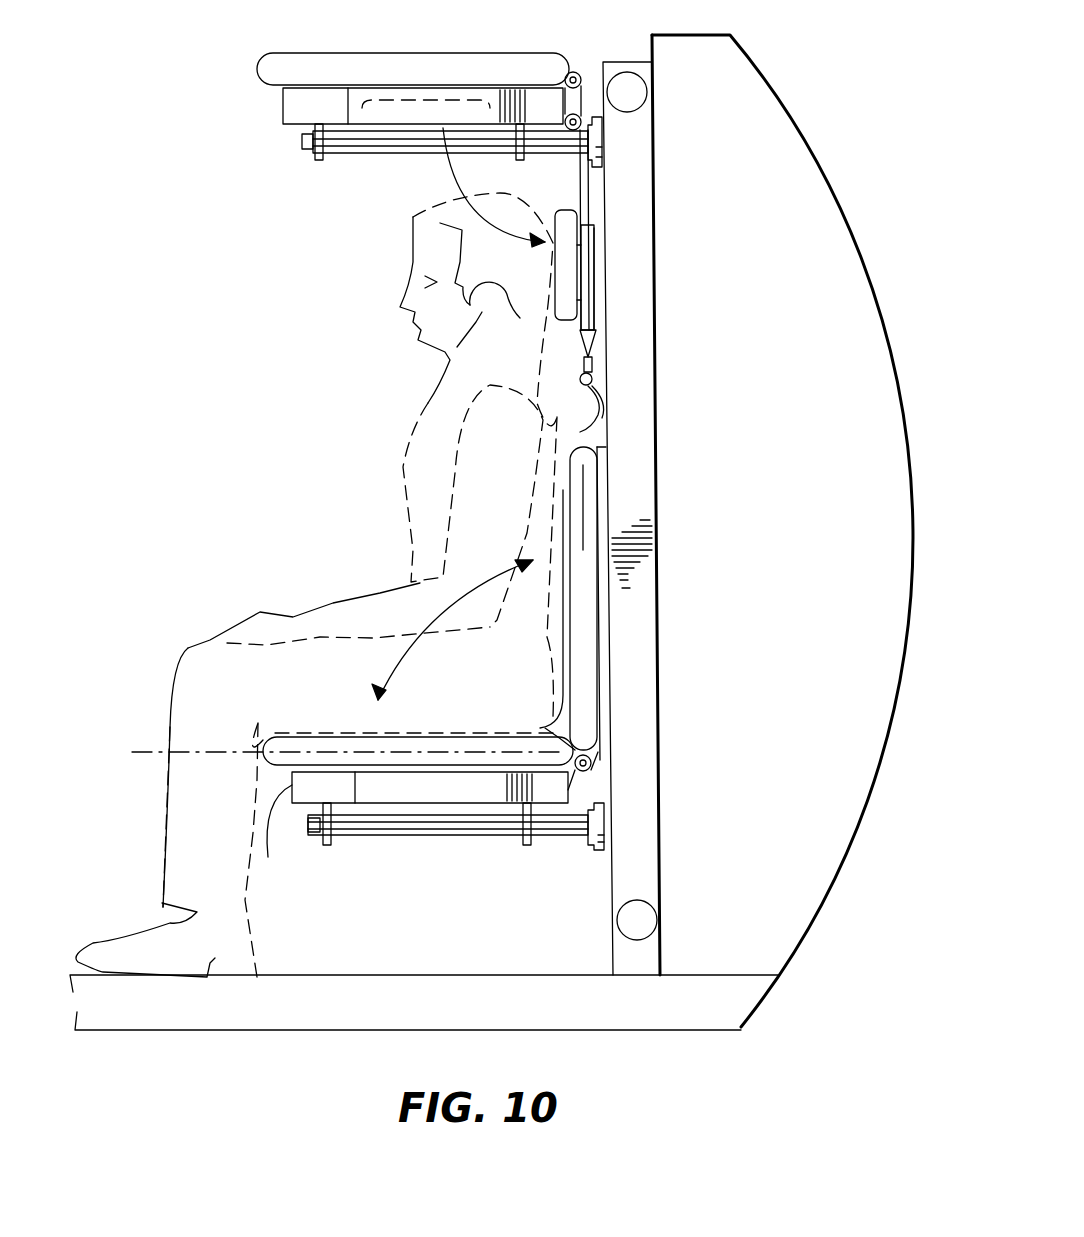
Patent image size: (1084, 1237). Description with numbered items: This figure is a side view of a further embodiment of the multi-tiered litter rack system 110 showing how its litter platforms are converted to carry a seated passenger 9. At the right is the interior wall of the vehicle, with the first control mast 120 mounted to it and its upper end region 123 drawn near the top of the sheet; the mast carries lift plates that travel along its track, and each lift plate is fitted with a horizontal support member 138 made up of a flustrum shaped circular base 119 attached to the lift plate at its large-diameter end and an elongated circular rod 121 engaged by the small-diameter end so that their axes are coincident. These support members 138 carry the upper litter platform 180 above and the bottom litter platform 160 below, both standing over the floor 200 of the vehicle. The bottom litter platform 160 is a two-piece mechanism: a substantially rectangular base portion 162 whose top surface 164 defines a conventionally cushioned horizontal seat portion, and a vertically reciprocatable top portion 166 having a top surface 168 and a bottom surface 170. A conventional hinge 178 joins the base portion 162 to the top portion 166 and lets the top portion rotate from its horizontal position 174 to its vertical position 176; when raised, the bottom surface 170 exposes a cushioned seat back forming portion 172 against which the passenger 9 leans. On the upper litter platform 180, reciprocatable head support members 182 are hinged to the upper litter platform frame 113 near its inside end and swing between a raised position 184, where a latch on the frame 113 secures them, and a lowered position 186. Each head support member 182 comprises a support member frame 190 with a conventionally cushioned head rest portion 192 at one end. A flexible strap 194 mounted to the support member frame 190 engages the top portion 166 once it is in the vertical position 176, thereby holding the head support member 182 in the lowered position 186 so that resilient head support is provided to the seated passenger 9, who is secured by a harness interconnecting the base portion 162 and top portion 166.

The seated passenger 9 is at (417, 233).
The multi-tiered litter rack system 110 is at (838, 205).
The upper litter platform frame 113 is at (283, 107).
The flustrum shaped circular base 119 is at (605, 145).
The first control mast 120 is at (815, 142).
The elongated circular rod 121 is at (300, 152).
The wall upper portion 123 is at (753, 62).
The horizontal support member 138 is at (300, 143).
The bottom litter platform 160 is at (290, 837).
The base portion 162 is at (270, 743).
The top surface 164 is at (308, 737).
The vertically reciprocatable top portion 166 is at (599, 662).
The top surface 168 is at (600, 620).
The bottom surface 170 is at (565, 725).
The seat back forming portion 172 is at (565, 520).
The horizontal position 174 is at (153, 752).
The vertical position 176 is at (602, 408).
The hinge 178 is at (578, 72).
The upper litter platform 180 is at (257, 63).
The head support member 182 is at (552, 195).
The raised position 184 is at (407, 113).
The lowered position 186 is at (572, 305).
The support member frame 190 is at (585, 195).
The head rest portion 192 is at (557, 313).
The flexible strap 194 is at (592, 376).
The floor 200 is at (395, 972).